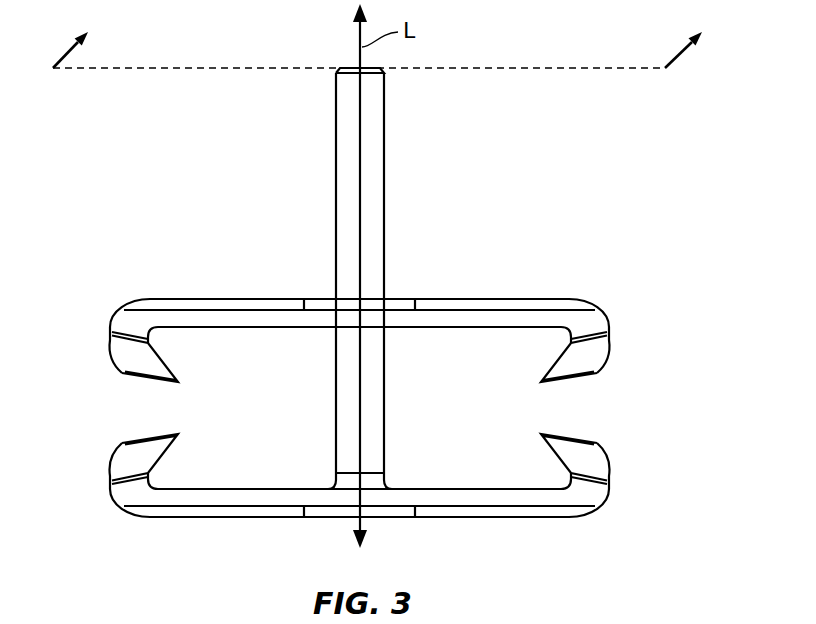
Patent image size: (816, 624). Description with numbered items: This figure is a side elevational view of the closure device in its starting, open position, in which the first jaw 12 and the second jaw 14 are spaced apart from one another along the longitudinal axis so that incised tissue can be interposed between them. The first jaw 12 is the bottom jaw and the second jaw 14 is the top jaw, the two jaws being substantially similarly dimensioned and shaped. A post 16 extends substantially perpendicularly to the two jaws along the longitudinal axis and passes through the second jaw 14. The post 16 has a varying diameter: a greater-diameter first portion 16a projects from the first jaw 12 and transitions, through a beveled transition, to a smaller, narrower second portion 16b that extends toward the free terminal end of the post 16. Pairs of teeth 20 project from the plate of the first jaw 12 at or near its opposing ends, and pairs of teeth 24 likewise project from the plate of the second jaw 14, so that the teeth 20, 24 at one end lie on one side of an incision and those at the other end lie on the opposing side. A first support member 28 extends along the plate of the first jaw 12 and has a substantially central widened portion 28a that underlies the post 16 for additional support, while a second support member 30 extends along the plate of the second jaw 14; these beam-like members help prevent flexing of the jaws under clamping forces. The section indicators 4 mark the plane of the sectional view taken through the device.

The section line 4- 4 is at (385, 37).
The first jaw 12 is at (360, 508).
The second jaw 14 is at (360, 311).
The post 16 is at (361, 278).
The first portion 16a is at (386, 408).
The second portion 16b is at (336, 137).
The teeth 20 is at (167, 452).
The teeth 24 is at (166, 362).
The first support member 28 is at (221, 518).
The widened portion 28a is at (332, 518).
The second support member 30 is at (240, 298).